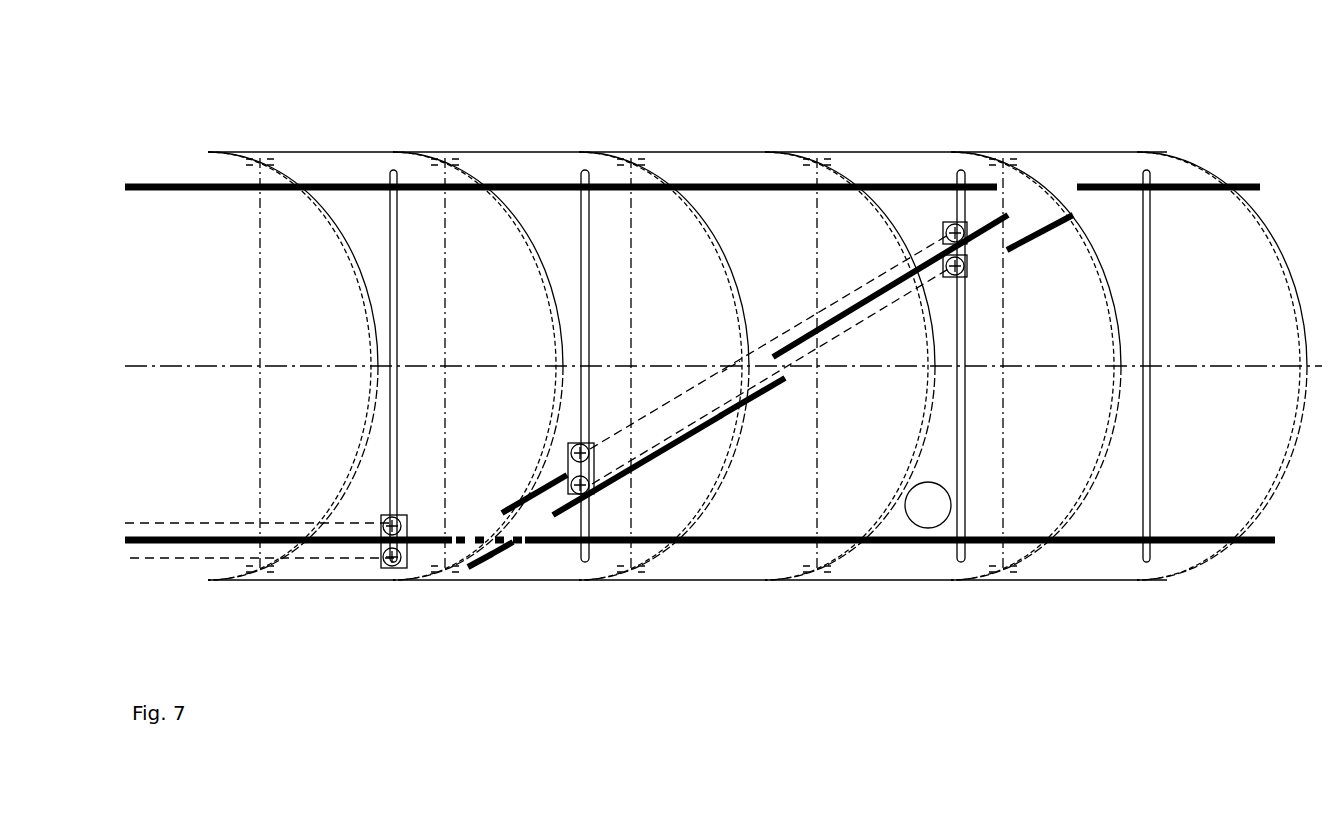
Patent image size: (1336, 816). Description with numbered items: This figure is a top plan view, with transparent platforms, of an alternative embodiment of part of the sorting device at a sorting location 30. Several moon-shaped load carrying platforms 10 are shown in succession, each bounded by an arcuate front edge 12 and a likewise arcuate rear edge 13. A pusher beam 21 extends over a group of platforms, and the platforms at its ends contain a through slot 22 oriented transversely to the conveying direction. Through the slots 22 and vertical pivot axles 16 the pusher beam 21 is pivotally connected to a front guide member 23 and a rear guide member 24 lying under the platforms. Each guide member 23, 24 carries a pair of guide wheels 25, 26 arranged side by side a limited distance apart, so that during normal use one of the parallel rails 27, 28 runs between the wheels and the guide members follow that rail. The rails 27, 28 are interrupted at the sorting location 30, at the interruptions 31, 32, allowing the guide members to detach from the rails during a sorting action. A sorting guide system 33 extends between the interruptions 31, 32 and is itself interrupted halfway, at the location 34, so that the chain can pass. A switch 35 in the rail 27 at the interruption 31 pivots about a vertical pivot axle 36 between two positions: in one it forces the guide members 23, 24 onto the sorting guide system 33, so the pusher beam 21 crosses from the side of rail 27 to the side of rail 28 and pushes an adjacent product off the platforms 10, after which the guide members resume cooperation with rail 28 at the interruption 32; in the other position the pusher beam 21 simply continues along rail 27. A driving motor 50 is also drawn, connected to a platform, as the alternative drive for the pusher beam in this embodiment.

The load carrying platform 10 is at (510, 165).
The arcuate front edge 12 is at (1283, 290).
The arcuate rear edge 13 is at (375, 330).
The vertical pivot axle 16 is at (390, 536).
The pusher beam 21 is at (842, 345).
The through slot 22 is at (588, 218).
The front guide member 23 is at (425, 560).
The rear guide member 24 is at (590, 465).
The guide wheel 25 is at (946, 228).
The guide wheel 26 is at (586, 445).
The rail 27 is at (312, 548).
The rail 28 is at (305, 183).
The sorting location 30 is at (789, 103).
The interruption 31 is at (480, 578).
The interruption 32 is at (1043, 180).
The sorting guide system 33 is at (730, 357).
The interruption location of sorting guide system 34 is at (782, 367).
The switch 35 is at (512, 553).
The vertical pivot axle 36 is at (517, 550).
The motor 50 is at (905, 507).